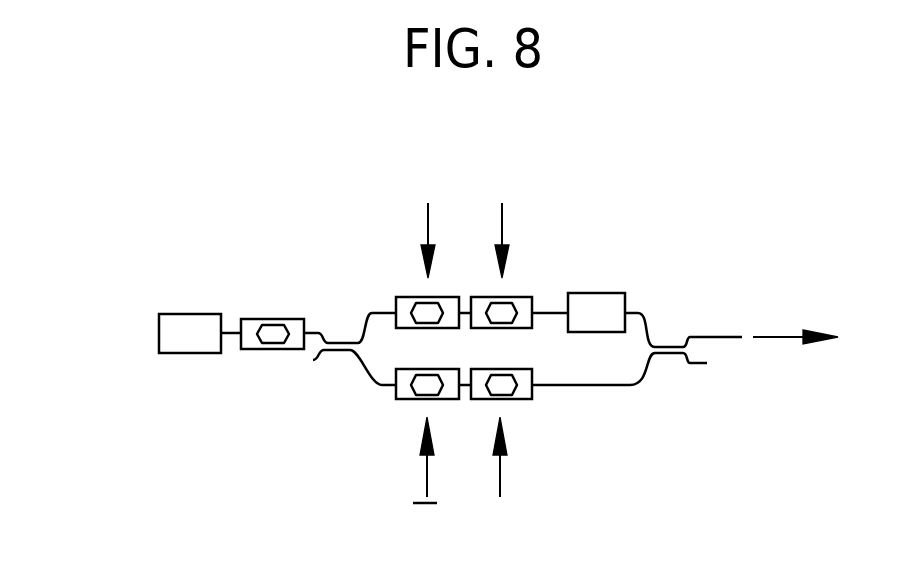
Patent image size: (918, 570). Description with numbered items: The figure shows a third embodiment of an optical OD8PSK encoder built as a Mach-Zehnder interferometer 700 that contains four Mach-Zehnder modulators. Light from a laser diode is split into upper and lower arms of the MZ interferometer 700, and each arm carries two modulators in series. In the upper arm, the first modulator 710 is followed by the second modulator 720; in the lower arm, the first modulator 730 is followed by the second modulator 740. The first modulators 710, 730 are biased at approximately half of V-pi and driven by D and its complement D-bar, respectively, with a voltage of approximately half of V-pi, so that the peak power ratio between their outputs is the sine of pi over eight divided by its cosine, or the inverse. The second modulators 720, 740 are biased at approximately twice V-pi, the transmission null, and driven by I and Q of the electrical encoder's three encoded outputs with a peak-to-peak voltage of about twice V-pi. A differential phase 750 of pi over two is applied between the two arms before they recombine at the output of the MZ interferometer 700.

The MZ interferometer 700 is at (168, 131).
The first modulator, upper arm 710 is at (418, 297).
The second modulator, upper arm 720 is at (522, 297).
The first modulator, lower arm 730 is at (400, 398).
The second modulator, lower arm 740 is at (530, 398).
The differential phase 750 is at (619, 292).